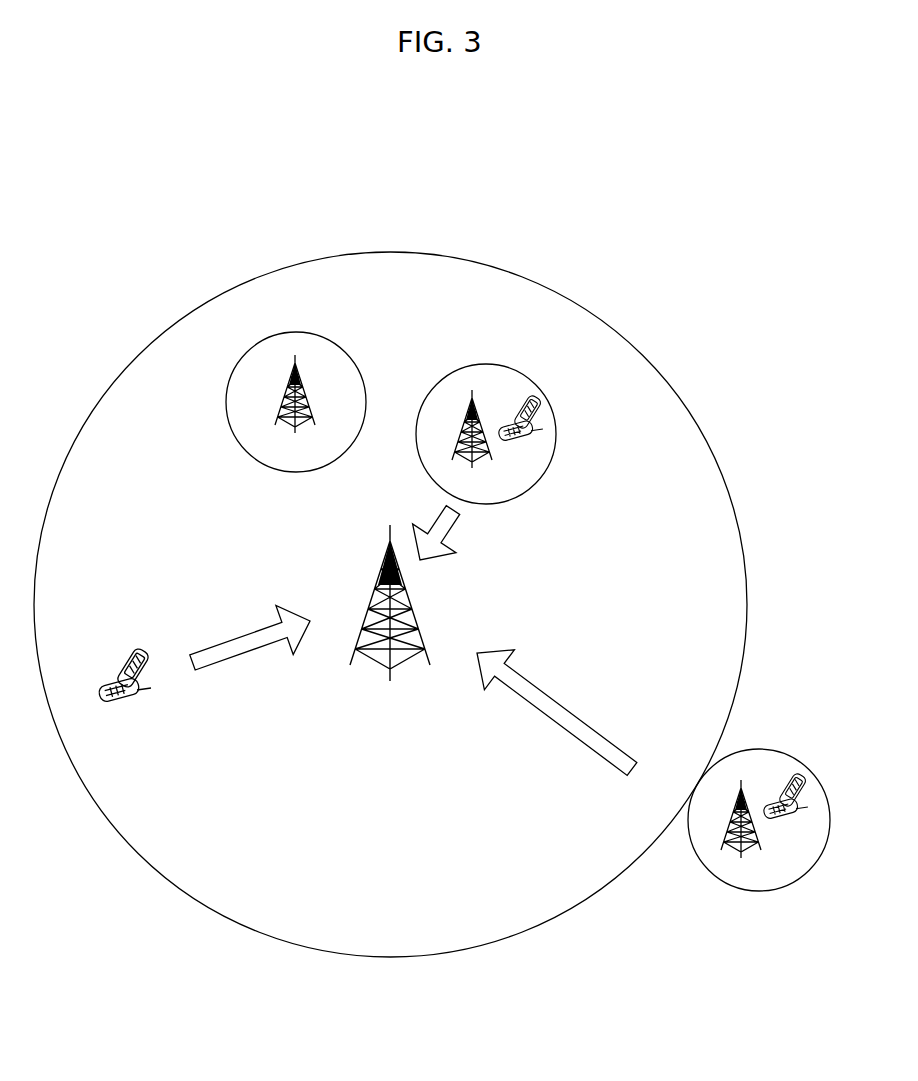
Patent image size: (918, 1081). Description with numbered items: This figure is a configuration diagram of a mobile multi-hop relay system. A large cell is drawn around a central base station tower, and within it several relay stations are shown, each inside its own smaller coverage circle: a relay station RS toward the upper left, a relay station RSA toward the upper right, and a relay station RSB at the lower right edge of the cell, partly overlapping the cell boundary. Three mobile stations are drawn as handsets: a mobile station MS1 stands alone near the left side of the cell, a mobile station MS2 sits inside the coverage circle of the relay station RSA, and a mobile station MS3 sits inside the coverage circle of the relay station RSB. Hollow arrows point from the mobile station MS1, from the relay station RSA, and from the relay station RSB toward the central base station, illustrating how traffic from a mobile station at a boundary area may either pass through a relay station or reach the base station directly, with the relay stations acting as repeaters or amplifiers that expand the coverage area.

The relay station RS is at (296, 402).
The relay station A RSA is at (486, 434).
The relay station B RSB is at (759, 820).
The mobile station 1 MS1 is at (128, 692).
The mobile station 2 MS2 is at (550, 406).
The mobile station 3 MS3 is at (816, 782).